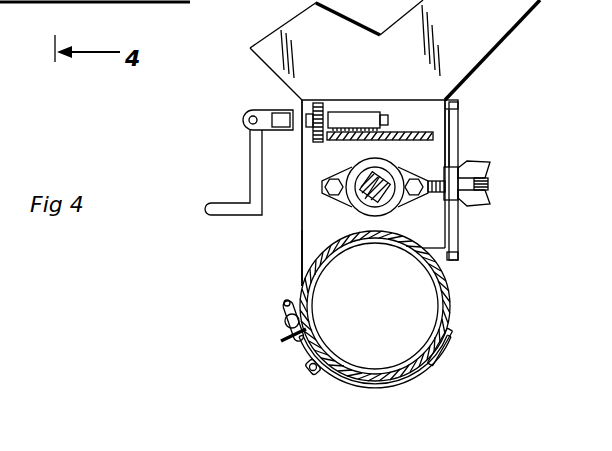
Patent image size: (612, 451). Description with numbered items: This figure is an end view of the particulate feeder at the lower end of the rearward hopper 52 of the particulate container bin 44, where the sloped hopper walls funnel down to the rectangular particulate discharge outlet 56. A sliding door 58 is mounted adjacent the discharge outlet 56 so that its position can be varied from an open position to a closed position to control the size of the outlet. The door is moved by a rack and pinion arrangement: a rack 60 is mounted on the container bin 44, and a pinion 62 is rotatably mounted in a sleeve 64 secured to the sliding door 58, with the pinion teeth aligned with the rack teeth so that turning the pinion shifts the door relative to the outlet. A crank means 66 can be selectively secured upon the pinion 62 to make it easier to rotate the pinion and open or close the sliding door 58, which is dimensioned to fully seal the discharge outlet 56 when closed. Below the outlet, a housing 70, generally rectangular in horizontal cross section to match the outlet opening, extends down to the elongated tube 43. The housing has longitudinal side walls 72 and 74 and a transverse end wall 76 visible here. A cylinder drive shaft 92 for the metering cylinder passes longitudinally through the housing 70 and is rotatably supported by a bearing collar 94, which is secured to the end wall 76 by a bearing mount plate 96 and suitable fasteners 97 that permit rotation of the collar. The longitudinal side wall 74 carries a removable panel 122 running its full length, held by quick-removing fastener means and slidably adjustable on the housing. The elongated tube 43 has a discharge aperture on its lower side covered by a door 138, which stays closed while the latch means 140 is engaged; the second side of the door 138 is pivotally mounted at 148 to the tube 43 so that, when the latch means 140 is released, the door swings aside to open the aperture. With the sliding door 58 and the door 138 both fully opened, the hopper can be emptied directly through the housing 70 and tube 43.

The elongated tube 43 is at (450, 300).
The particulate container bin 44 is at (512, 38).
The rearward hopper 52 is at (467, 19).
The particulate discharge outlet 56 is at (398, 98).
The sliding door 58 is at (417, 131).
The rack 60 is at (317, 103).
The pinion 62 is at (313, 140).
The sleeve 64 is at (356, 118).
The crank means 66 is at (249, 166).
The housing 70 is at (300, 242).
The longitudinal side wall 72 is at (302, 216).
The longitudinal side wall 74 is at (460, 228).
The transverse end wall 76 is at (347, 232).
The cylinder drive shaft 92 is at (371, 183).
The bearing collar 94 is at (398, 171).
The bearing mount plate 96 is at (414, 177).
The fasteners 97 is at (331, 193).
The removable panel 122 is at (460, 130).
The door 138 is at (418, 372).
The latch means 140 is at (291, 350).
The pivotal mounting 148 is at (445, 347).